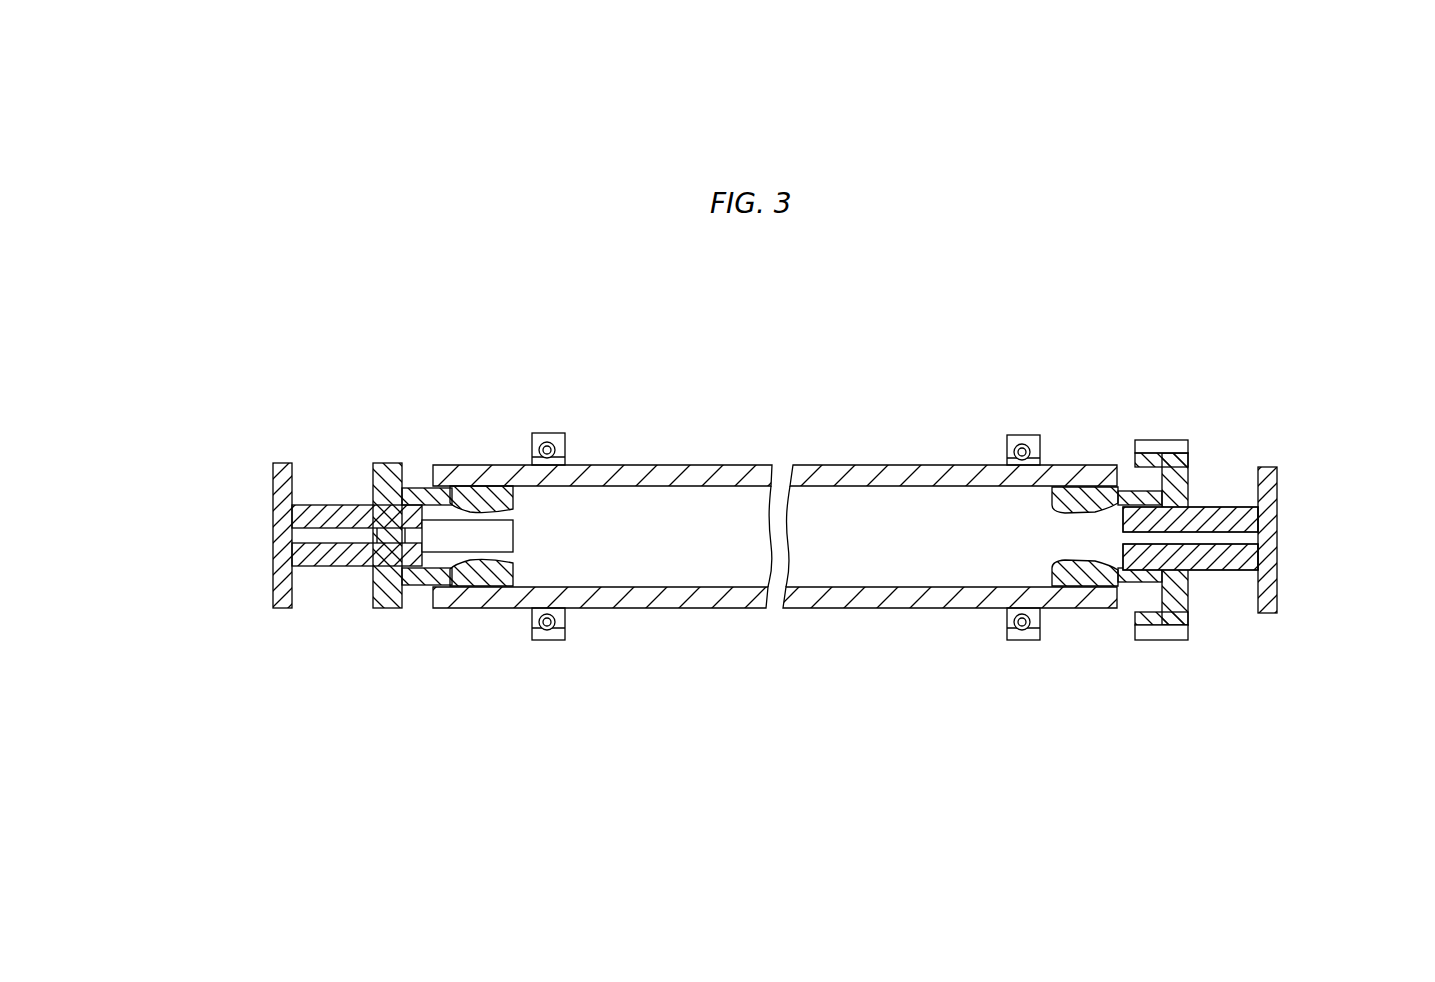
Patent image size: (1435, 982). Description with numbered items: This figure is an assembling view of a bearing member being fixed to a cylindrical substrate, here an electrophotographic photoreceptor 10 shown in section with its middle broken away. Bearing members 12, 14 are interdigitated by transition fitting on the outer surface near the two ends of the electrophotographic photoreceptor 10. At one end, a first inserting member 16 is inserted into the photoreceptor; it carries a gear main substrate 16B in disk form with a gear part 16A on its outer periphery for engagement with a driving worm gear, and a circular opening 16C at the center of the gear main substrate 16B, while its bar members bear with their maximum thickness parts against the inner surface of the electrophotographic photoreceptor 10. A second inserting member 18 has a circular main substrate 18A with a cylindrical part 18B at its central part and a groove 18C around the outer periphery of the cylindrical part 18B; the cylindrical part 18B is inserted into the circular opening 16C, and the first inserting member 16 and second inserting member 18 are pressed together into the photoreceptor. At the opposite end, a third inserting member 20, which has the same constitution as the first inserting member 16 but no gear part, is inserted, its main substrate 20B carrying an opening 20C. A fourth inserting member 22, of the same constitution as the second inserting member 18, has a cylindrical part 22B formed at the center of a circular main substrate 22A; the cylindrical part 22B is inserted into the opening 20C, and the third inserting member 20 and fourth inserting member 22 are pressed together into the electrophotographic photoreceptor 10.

The electrophotographic photoreceptor 10 is at (617, 465).
The bearing member 12 is at (1022, 435).
The bearing member 14 is at (548, 433).
The first inserting member 16 is at (1173, 483).
The gear part 16A is at (1163, 446).
The gear main substrate 16B is at (1195, 467).
The circular opening 16C is at (1107, 486).
The second inserting member 18 is at (1273, 579).
The circular main substrate 18A is at (1272, 538).
The cylindrical part 18B is at (1222, 573).
The groove 18C is at (1190, 607).
The third inserting member 20 is at (412, 475).
The main substrate 20B is at (373, 466).
The opening 20C is at (430, 487).
The fourth inserting member 22 is at (318, 556).
The circular main substrate 22A is at (279, 523).
The cylindrical part 22B is at (341, 568).